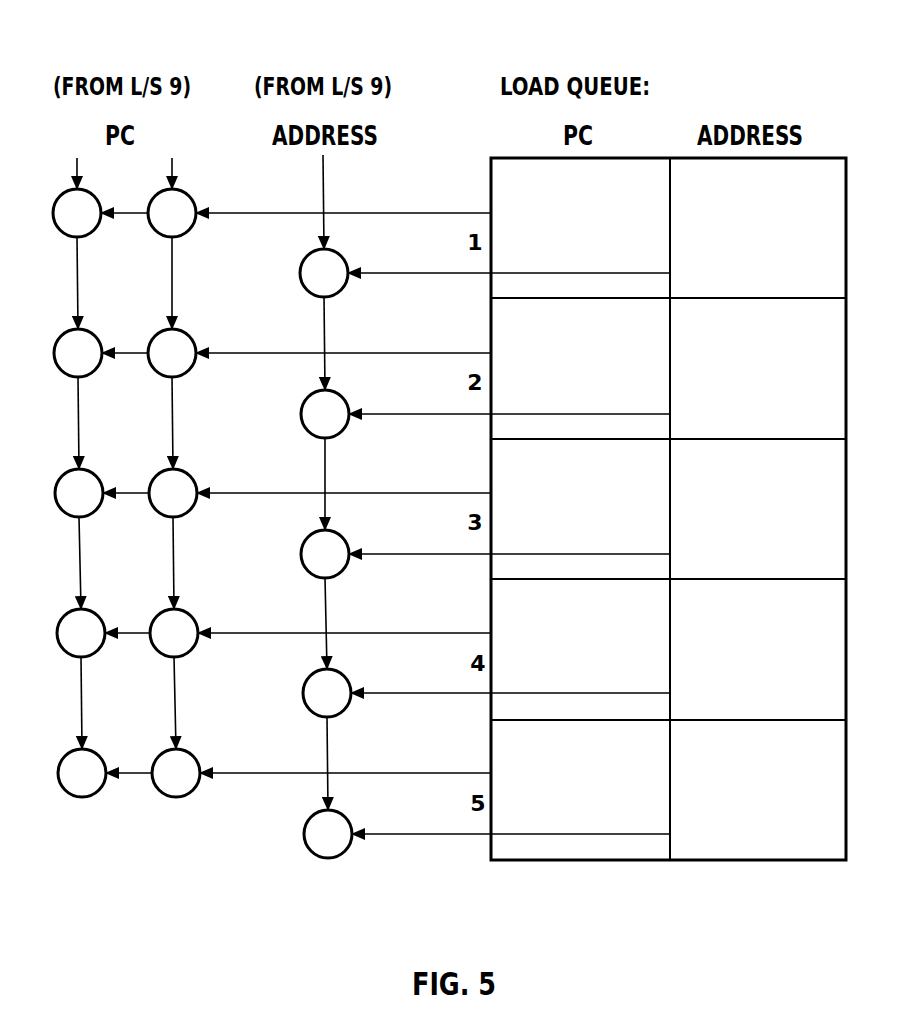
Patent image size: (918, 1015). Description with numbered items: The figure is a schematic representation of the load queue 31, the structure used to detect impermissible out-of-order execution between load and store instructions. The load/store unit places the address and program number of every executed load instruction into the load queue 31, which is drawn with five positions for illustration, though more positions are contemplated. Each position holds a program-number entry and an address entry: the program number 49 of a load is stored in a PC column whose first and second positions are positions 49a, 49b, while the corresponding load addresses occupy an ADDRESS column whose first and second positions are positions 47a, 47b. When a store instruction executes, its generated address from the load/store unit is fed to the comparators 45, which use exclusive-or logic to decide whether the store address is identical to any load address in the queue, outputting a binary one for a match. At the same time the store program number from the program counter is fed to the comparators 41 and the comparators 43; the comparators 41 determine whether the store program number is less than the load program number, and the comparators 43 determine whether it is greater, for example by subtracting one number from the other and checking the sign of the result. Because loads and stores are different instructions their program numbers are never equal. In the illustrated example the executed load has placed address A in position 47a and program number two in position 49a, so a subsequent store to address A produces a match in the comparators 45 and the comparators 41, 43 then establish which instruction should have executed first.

The load queue 31 is at (660, 465).
The comparator 41 is at (63, 196).
The comparator 43 is at (187, 196).
The comparator 45 is at (339, 256).
The position 47a is at (815, 167).
The position 47b is at (838, 343).
The position 49a is at (500, 186).
The position 49b is at (500, 337).
The program number 49 is at (575, 806).